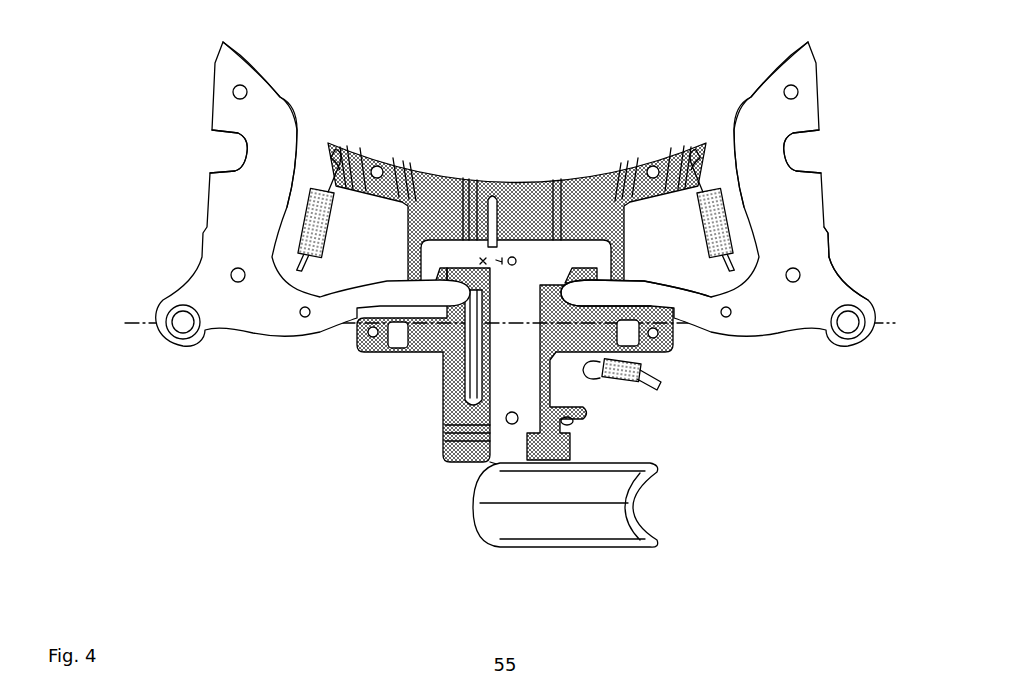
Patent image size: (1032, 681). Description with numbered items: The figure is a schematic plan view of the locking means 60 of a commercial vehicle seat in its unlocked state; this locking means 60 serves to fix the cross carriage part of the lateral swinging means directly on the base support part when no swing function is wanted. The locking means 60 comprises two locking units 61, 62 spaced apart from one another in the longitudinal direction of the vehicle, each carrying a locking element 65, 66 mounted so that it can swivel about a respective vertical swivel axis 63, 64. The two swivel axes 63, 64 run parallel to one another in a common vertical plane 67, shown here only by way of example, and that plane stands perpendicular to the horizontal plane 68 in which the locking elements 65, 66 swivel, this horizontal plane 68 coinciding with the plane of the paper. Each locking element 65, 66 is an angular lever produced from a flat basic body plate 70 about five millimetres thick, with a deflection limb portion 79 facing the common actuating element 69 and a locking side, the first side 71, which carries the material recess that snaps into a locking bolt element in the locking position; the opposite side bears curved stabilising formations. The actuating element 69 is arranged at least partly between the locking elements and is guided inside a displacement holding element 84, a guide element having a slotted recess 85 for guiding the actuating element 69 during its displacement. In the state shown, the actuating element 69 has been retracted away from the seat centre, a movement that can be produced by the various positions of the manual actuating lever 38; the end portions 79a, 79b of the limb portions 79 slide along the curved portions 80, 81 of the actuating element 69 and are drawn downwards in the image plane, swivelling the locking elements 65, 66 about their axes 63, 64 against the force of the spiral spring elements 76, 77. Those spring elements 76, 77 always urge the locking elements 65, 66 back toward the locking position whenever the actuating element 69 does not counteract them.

The manual actuating lever 38 is at (500, 517).
The locking means 60 is at (606, 344).
The locking unit 61 is at (738, 252).
The locking unit 62 is at (267, 290).
The vertical swivel axis 63 is at (850, 327).
The vertical swivel axis 64 is at (183, 330).
The locking element 65 is at (738, 217).
The locking element 66 is at (306, 217).
The vertical plane 67 is at (127, 320).
The horizontal plane 68 is at (64, 437).
The actuating element 69 is at (560, 257).
The basic body plate 70 is at (840, 278).
The first side 71 is at (823, 230).
The spiral spring element 76 is at (697, 143).
The spiral spring element 77 is at (333, 142).
The limb portion 79 is at (517, 292).
The end portion 79a is at (447, 290).
The end portion 79b is at (652, 378).
The curved portion 80 is at (617, 263).
The curved portion 81 is at (410, 300).
The displacement holding element 84 is at (593, 193).
The slotted recess 85 is at (495, 210).